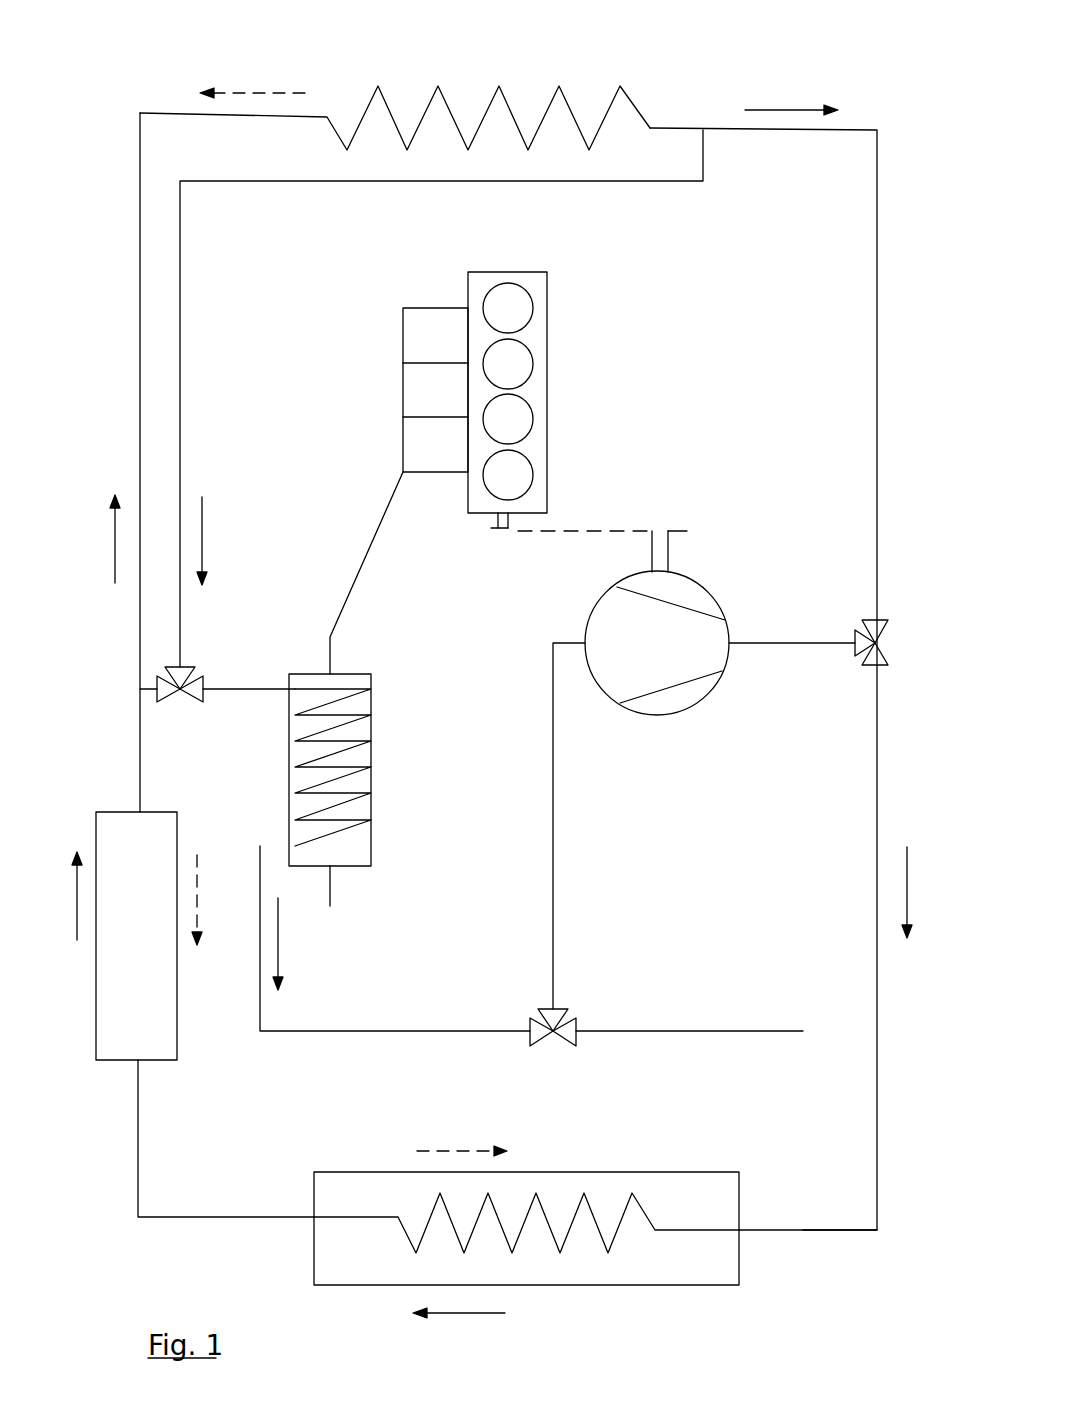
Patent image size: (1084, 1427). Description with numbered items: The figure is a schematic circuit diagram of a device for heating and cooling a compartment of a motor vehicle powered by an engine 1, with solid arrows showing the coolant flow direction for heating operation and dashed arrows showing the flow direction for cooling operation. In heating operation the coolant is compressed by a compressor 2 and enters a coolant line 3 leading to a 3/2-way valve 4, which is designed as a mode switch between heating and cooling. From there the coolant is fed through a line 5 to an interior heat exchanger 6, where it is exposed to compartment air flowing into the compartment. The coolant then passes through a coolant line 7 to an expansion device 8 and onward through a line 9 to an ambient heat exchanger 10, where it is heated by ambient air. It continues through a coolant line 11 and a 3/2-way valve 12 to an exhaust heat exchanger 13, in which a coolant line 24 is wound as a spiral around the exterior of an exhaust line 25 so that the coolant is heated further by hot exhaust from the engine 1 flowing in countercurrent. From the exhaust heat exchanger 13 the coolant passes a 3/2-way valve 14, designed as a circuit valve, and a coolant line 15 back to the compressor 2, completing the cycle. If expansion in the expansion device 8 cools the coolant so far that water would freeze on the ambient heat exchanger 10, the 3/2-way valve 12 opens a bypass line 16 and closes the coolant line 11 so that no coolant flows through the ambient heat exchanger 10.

The engine 1 is at (548, 413).
The compressor 2 is at (690, 710).
The coolant line 3 is at (761, 643).
The 3/2-way valve 4 is at (878, 635).
The line 5 is at (878, 780).
The interior heat exchanger 6 is at (668, 1288).
The coolant line 7 is at (137, 1157).
The expansion device 8 is at (192, 1033).
The line 9 is at (137, 760).
The ambient heat exchanger 10 is at (560, 86).
The coolant line 11 is at (613, 181).
The 3/2-way valve 12 is at (200, 666).
The exhaust heat exchanger 13 is at (389, 775).
The 3/2-way valve 14 is at (565, 1040).
The coolant line 15 is at (555, 905).
The bypass line 16 is at (143, 690).
The coolant line 24 is at (347, 690).
The exhaust line 25 is at (370, 553).